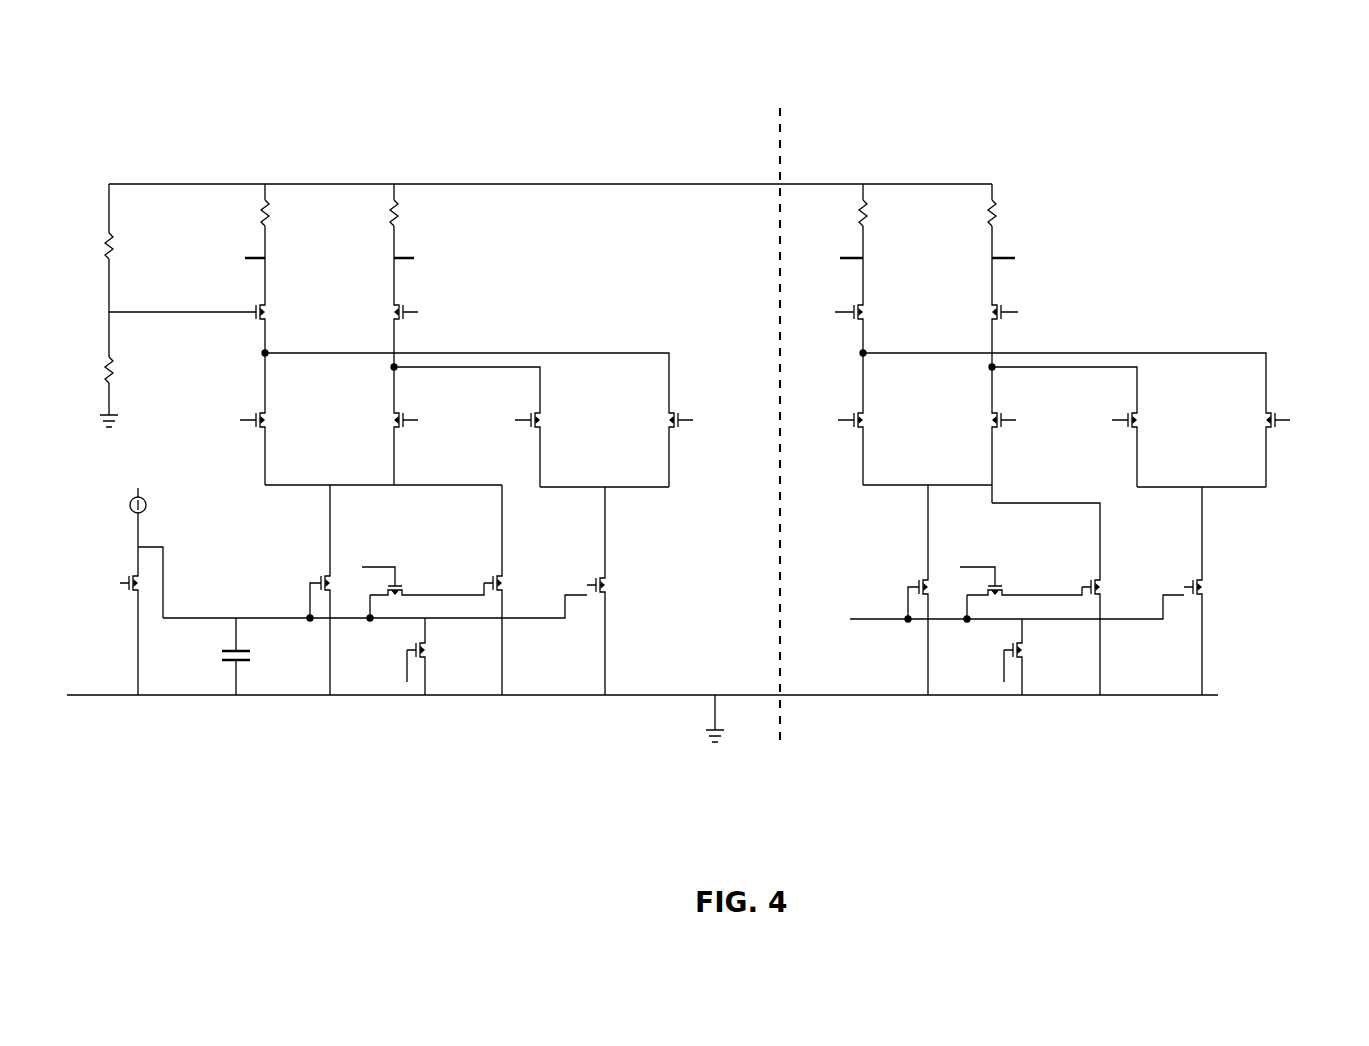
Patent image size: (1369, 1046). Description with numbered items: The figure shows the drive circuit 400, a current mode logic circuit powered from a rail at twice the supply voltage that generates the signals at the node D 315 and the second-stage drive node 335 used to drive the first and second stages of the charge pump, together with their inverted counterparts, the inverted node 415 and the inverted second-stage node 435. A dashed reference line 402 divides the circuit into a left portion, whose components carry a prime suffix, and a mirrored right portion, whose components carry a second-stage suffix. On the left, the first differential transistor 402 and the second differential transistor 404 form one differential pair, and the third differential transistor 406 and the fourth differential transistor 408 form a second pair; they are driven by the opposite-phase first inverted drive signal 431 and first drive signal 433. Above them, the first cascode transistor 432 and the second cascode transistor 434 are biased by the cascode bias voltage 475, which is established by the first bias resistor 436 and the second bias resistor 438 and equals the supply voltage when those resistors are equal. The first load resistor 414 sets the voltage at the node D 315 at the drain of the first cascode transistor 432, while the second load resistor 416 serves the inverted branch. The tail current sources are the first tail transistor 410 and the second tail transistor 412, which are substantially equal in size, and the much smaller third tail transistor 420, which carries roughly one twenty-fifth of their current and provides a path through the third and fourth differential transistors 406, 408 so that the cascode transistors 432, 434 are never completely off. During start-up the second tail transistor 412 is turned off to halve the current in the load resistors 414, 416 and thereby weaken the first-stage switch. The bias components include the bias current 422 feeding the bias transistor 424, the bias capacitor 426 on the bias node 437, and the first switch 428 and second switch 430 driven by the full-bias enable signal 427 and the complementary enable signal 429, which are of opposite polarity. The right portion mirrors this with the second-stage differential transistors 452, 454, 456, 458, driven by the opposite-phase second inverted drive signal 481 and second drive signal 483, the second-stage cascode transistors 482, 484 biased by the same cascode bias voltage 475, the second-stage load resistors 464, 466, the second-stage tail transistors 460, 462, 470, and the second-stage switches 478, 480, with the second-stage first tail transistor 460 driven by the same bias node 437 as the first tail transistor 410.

The circuit 400 is at (232, 125).
The transistor MN1' / reference line 402 is at (528, 404).
The node D 315 is at (249, 261).
The node D_stg2 335 is at (831, 260).
The transistor MN2' 404 is at (380, 416).
The transistor MN3' 406 is at (555, 416).
The transistor MN4' 408 is at (655, 416).
The transistor MN7' 410 is at (307, 567).
The transistor MN8' 412 is at (513, 562).
The resistor R3' 414 is at (285, 223).
The node Db 415 is at (418, 260).
The resistor R4' 416 is at (376, 223).
The transistor MN9' 420 is at (619, 573).
The bias current Ibias 422 is at (155, 529).
The bias transistor MN_bias' 424 is at (112, 621).
The capacitor C1' 426 is at (219, 656).
The control signal enfullbias 427 is at (683, 547).
The transistor/switch MNsw1' 428 is at (427, 582).
The control signal enfullbias_b 429 is at (679, 666).
The transistor/switch MNsw2' 430 is at (447, 656).
The signal p1b_cm1 431 is at (361, 440).
The transistor MN5' 432 is at (282, 305).
The signal p1_cm1 433 is at (578, 426).
The transistor MN6' 434 is at (381, 305).
The node Db_stg2 435 is at (1025, 260).
The resistor R1' 436 is at (94, 258).
The bias signal nbias 437 is at (673, 597).
The resistor R2' 438 is at (94, 382).
The transistor MN1_2 452 is at (883, 416).
The transistor MN2_2 454 is at (971, 416).
The transistor MN3_2 456 is at (1156, 416).
The transistor MN4_2 458 is at (1246, 416).
The transistor MN7_2 460 is at (898, 568).
The transistor MN8_2 462 is at (1119, 560).
The resistor R3_2 464 is at (884, 223).
The resistor R4_2 466 is at (973, 223).
The transistor MN9_2 470 is at (1222, 573).
The bias voltage Vcas 475 is at (578, 314).
The transistor MNsw1_2 478 is at (1024, 581).
The transistor MNsw2_2 480 is at (1055, 657).
The signal p2b_cm1 481 is at (956, 441).
The transistor MN5_2 482 is at (883, 305).
The signal p2_cm1 483 is at (1176, 426).
The transistor MN6_2 484 is at (974, 305).